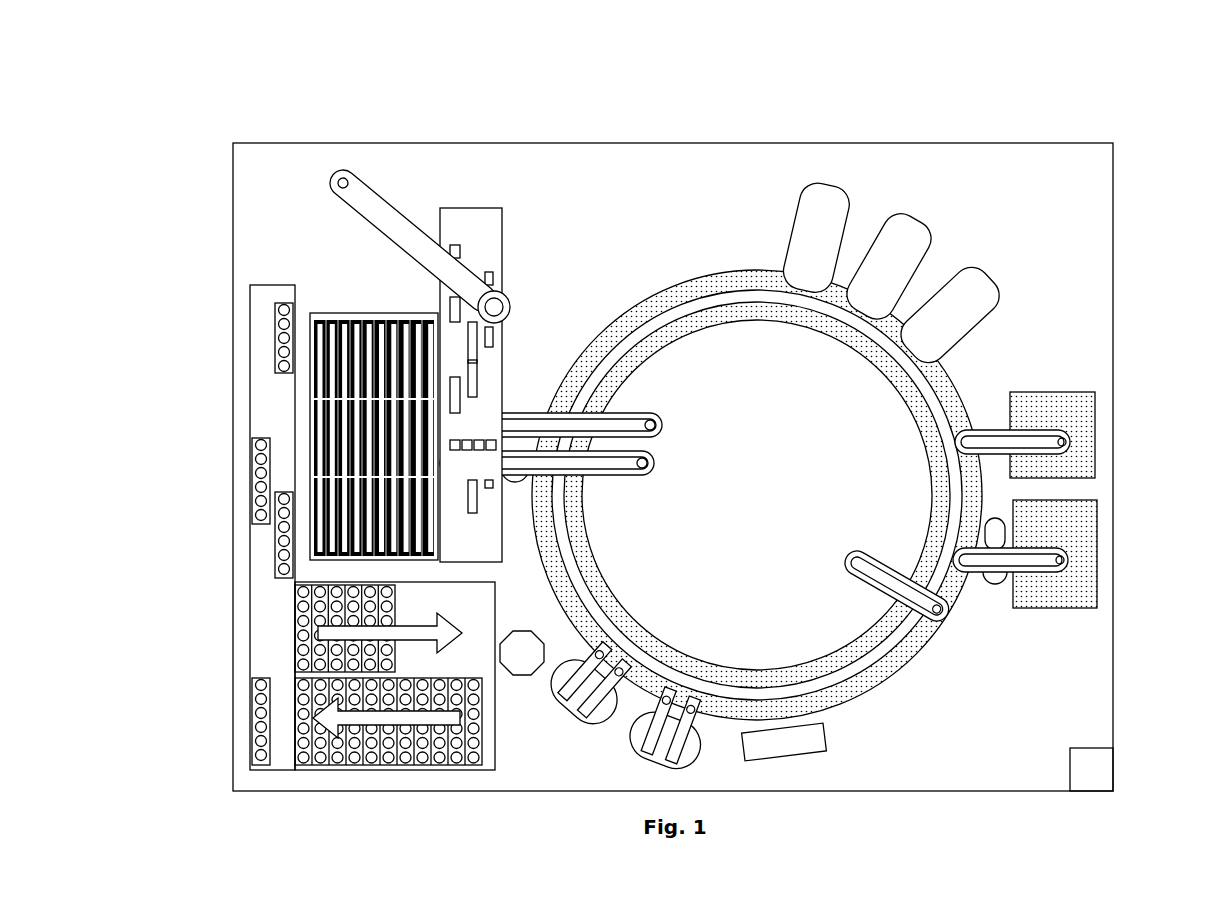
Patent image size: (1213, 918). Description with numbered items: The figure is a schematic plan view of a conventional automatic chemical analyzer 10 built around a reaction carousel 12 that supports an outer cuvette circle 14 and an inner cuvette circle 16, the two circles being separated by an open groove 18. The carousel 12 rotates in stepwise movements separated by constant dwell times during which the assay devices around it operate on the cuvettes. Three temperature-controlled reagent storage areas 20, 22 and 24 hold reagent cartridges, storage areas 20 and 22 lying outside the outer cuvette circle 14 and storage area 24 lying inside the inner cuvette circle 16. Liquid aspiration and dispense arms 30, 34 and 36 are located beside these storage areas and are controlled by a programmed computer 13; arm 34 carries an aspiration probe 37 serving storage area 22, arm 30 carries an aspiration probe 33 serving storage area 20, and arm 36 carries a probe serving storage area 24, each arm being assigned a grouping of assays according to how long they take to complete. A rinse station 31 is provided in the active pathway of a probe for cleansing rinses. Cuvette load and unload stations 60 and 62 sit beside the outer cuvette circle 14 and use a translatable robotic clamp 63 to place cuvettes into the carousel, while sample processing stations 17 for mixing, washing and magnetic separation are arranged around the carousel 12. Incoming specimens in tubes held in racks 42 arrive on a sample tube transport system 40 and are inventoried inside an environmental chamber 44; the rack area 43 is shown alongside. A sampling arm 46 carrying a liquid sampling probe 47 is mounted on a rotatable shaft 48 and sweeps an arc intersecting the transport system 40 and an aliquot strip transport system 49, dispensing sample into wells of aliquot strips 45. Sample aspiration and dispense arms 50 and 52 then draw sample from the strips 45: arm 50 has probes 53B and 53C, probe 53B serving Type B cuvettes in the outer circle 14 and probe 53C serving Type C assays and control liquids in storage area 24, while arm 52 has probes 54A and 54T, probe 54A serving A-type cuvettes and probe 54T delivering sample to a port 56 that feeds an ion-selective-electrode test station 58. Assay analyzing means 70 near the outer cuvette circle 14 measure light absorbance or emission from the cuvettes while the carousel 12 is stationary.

The automatic chemical analyzer 10 is at (1087, 118).
The reaction carousel 12 is at (657, 288).
The programmed computer 13 is at (1091, 769).
The outer cuvette circle 14 is at (713, 280).
The inner cuvette circle 16 is at (757, 312).
The sample processing stations 17 is at (745, 742).
The open groove 18 is at (648, 322).
The reagent storage area 20 is at (1047, 390).
The reagent storage area 22 is at (1044, 612).
The reagent storage area 24 is at (830, 633).
The aspiration and dispense arm 30 is at (995, 428).
The rinse station 31 is at (995, 520).
The aspiration probe 33 is at (1095, 410).
The aspiration and dispense arm 34 is at (968, 574).
The aspiration and dispense arm 36 is at (845, 572).
The aspiration probe 37 is at (1063, 578).
The sample tube transport system 40 is at (248, 642).
The racks 42 is at (336, 702).
The sample rack 43 is at (277, 617).
The environmental chamber 44 is at (360, 396).
The aliquot strips 45 is at (443, 303).
The sampling arm 46 is at (402, 212).
The liquid sampling probe 47 is at (500, 300).
The rotatable shaft 48 is at (344, 178).
The aliquot strip transport system 49 is at (470, 208).
The sample aspiration and dispense arm 50 is at (571, 412).
The sample aspiration and dispense arm 52 is at (572, 483).
The liquid probe 53B is at (458, 422).
The liquid probe 53C is at (655, 430).
The liquid probe 54A is at (648, 470).
The liquid probe 54T is at (452, 468).
The port 56 is at (515, 488).
The ion-selective-electrode test station 58 is at (524, 682).
The cuvette load and unload station 60 is at (595, 718).
The cuvette load and unload station 62 is at (658, 758).
The translatable robotic clamp 63 is at (800, 672).
The assay analyzing means 70 is at (850, 207).